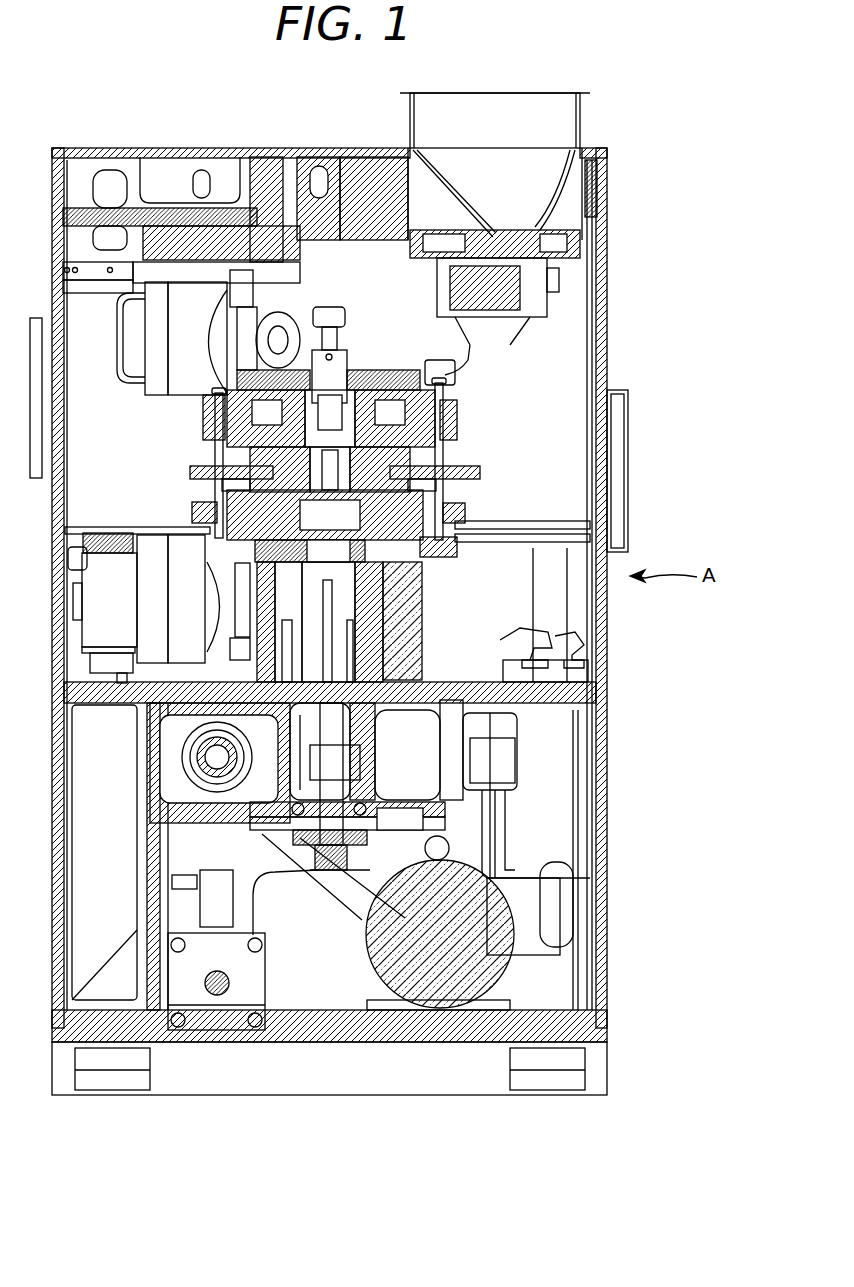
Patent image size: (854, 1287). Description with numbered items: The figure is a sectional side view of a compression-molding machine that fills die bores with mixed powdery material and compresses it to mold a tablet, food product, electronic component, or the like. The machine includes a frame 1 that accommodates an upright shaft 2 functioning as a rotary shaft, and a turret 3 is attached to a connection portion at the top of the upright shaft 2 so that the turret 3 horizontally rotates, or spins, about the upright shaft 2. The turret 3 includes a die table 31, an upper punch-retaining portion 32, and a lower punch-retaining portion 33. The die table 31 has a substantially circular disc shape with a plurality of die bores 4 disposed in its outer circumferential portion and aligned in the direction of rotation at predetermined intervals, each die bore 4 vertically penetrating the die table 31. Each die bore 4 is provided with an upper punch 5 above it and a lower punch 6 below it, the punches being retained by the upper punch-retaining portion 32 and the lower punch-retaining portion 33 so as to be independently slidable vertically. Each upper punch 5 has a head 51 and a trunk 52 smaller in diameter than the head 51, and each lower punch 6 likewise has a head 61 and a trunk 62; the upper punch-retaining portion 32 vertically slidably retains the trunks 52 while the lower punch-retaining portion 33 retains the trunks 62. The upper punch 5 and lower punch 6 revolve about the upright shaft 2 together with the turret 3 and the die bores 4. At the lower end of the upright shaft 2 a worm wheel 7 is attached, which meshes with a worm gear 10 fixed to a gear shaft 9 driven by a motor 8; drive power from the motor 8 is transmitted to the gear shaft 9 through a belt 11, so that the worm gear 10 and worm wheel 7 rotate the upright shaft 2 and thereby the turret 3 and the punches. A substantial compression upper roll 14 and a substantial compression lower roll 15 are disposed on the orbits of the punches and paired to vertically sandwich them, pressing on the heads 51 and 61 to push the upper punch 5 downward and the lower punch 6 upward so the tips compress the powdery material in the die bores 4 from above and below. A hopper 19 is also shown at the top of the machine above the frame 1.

The frame 1 is at (607, 602).
The upright shaft 2 is at (355, 783).
The turret 3 is at (466, 417).
The die bore 4 is at (480, 473).
The upper punch 5 is at (215, 450).
The lower punch 6 is at (222, 490).
The worm wheel 7 is at (497, 763).
The motor 8 is at (345, 953).
The gear shaft 9 is at (197, 760).
The worm gear 10 is at (189, 763).
The belt 11 is at (318, 885).
The substantial compression upper roll 14 is at (197, 342).
The substantial compression lower roll 15 is at (200, 598).
The hopper 19 is at (410, 116).
The die table 31 is at (190, 473).
The upper punch-retaining portion 32 is at (205, 420).
The lower punch-retaining portion 33 is at (192, 512).
The head 51 is at (455, 368).
The trunk 52 is at (457, 430).
The head 61 is at (452, 542).
The trunk 62 is at (465, 518).